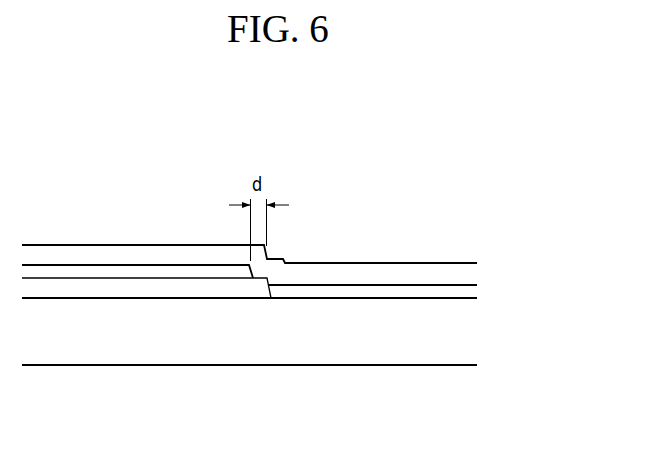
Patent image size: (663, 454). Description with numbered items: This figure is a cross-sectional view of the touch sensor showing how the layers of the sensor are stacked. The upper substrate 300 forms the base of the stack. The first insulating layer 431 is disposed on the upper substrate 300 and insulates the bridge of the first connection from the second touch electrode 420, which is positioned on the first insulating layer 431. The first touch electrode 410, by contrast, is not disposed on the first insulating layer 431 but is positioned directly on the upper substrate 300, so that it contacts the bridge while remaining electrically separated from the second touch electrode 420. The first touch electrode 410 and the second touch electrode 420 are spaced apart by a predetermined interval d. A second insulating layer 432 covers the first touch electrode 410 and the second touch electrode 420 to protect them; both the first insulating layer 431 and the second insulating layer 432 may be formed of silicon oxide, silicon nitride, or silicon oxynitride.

The upper substrate 300 is at (507, 333).
The first touch electrode 410 is at (107, 397).
The second touch electrode 420 is at (378, 397).
The first insulating layer 431 is at (223, 397).
The second insulating layer 432 is at (352, 275).